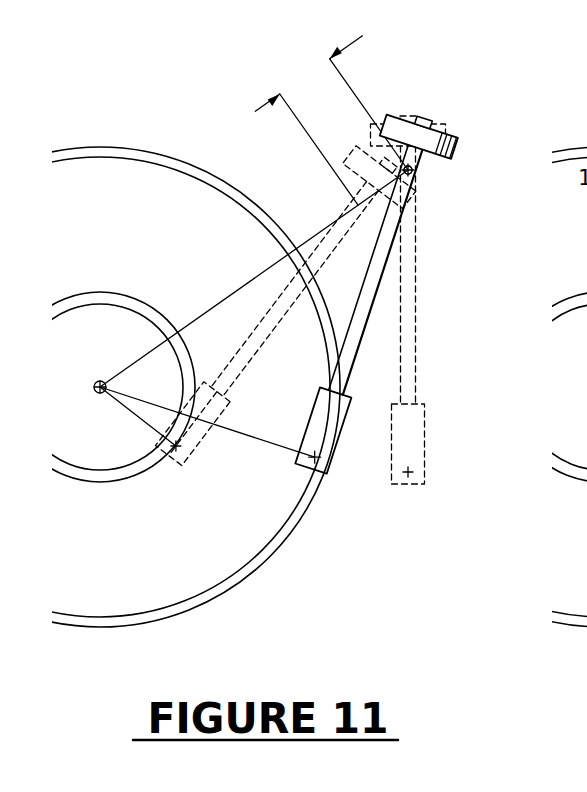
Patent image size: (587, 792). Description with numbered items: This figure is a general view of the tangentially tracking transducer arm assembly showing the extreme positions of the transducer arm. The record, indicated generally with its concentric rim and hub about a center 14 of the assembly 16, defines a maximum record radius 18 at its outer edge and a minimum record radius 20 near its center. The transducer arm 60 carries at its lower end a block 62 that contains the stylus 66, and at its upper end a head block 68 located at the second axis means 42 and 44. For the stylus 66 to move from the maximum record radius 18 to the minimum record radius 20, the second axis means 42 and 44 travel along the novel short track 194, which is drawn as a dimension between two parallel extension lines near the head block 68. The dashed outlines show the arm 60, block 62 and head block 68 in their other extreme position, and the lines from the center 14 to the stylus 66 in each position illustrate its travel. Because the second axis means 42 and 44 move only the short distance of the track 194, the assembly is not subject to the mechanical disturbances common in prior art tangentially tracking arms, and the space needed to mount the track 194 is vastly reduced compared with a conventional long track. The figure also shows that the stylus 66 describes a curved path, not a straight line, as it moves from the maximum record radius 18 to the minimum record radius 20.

The axis of rotation 14 is at (89, 362).
The wheel assembly 16 is at (100, 135).
The maximum record radius 18 is at (135, 160).
The minimum record radius 20 is at (95, 292).
The second axis means 42 is at (413, 171).
The second axis means 44 is at (408, 170).
The arm 60 is at (370, 259).
The slide block 62 is at (308, 425).
The stylus 66 is at (326, 474).
The head block 68 is at (388, 114).
The novel short track 194 is at (331, 120).